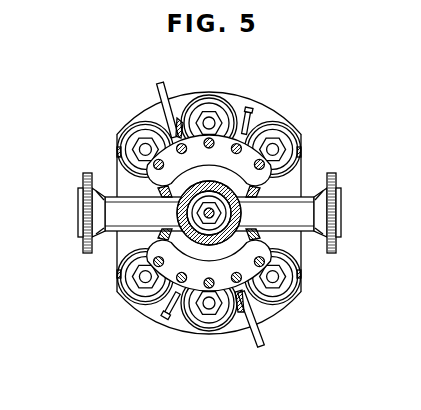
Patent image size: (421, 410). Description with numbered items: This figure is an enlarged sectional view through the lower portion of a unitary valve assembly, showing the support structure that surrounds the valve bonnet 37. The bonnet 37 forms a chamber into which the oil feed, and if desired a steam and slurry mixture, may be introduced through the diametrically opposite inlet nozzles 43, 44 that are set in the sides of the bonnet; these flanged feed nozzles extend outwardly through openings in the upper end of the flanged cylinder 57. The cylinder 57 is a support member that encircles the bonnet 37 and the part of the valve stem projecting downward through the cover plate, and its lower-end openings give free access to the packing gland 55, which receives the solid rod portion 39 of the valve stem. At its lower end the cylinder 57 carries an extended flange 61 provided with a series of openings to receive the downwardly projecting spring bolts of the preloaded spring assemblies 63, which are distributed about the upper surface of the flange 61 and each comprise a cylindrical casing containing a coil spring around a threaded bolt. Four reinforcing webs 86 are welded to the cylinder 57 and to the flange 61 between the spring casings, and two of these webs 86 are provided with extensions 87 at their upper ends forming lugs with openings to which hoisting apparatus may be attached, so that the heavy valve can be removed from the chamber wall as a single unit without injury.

The valve bonnet 37 is at (230, 232).
The solid rod portion 39 is at (222, 200).
The inlet nozzle 43 is at (72, 205).
The inlet nozzle 44 is at (338, 203).
The packing gland 55 is at (265, 185).
The flanged cylinder 57 is at (199, 275).
The extended flange 61 is at (124, 248).
The preloaded spring assemblies 63 is at (176, 117).
The reinforcing webs 86 is at (185, 125).
The extensions 87 is at (163, 81).